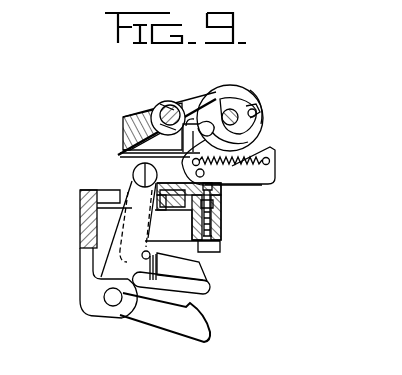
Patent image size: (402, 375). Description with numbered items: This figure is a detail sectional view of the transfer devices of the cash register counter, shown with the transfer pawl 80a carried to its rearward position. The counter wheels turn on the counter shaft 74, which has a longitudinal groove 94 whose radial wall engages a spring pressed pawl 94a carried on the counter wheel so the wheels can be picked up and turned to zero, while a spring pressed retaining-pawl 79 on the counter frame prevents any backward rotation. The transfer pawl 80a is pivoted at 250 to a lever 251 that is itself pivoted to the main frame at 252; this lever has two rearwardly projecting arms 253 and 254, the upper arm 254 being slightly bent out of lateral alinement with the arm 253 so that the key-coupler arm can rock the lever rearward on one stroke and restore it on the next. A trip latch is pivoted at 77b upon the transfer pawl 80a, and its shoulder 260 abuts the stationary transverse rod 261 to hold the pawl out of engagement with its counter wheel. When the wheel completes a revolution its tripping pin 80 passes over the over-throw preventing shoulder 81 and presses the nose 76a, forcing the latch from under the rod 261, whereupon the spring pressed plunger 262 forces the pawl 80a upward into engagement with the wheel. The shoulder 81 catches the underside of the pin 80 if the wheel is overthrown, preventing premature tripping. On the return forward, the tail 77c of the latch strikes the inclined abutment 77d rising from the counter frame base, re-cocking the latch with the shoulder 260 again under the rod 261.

The retaining-pawl 79 is at (135, 117).
The shoulder 260 is at (170, 105).
The transverse rod 261 is at (206, 118).
The tripping pin 80 is at (263, 131).
The counter shaft 74 is at (254, 123).
The nose 76a is at (233, 109).
The longitudinal groove 94 is at (255, 110).
The spring pressed pawl 94a is at (259, 105).
The transfer pawl 80a is at (275, 180).
The tail 77c is at (244, 171).
The over-throw preventing shoulder 81 is at (226, 172).
The inclined abutment 77d is at (183, 217).
The spring pressed plunger 262 is at (221, 212).
The pivot 77b is at (150, 160).
The pivot 250 is at (133, 176).
The lever 251 is at (93, 213).
The pivot 252 is at (104, 297).
The upper arm 254 is at (194, 280).
The arm 253 is at (175, 325).